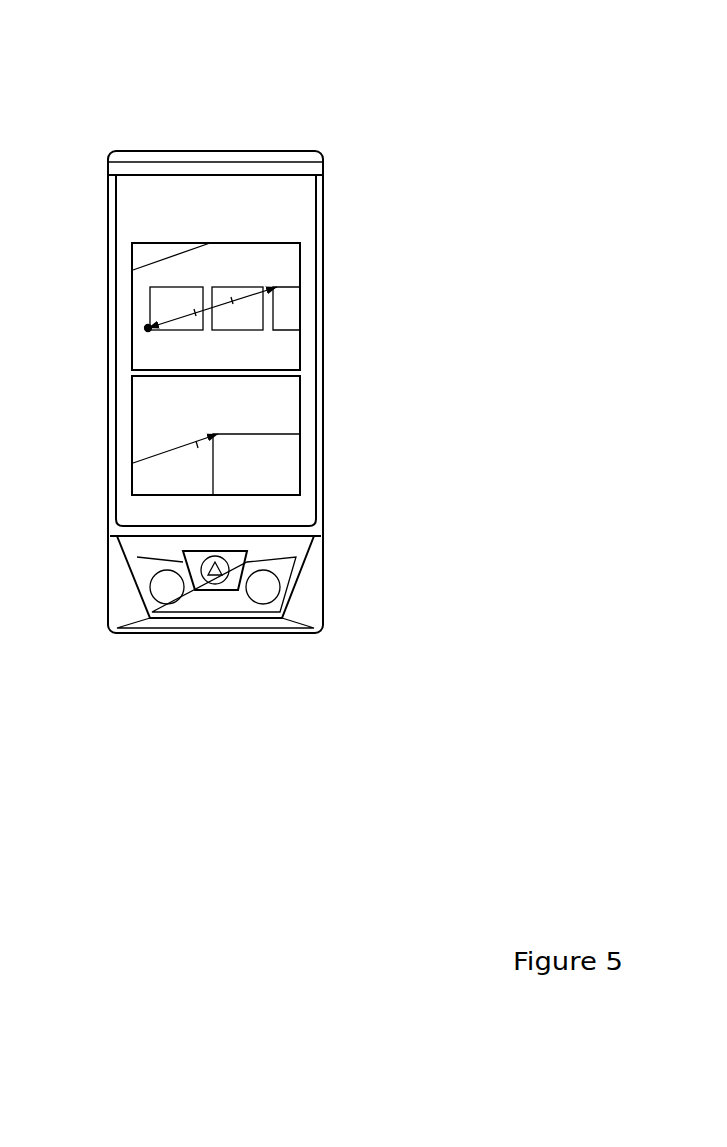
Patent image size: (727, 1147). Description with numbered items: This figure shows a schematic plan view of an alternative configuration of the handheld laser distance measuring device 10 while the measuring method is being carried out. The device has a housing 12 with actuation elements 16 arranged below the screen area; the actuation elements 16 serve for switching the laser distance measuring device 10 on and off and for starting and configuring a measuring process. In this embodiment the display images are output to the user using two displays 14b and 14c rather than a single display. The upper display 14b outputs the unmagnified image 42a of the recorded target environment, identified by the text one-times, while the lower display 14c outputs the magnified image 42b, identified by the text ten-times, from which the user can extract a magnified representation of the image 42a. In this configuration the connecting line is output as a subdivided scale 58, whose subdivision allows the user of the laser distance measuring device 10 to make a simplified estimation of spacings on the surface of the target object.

The laser distance measuring device 10 is at (133, 113).
The housing 12 is at (118, 610).
The display 14b is at (303, 252).
The display 14c is at (303, 388).
The actuation elements 16 is at (208, 603).
The image 42a is at (148, 310).
The image 42b is at (152, 424).
The subdivided scale 58 is at (205, 295).